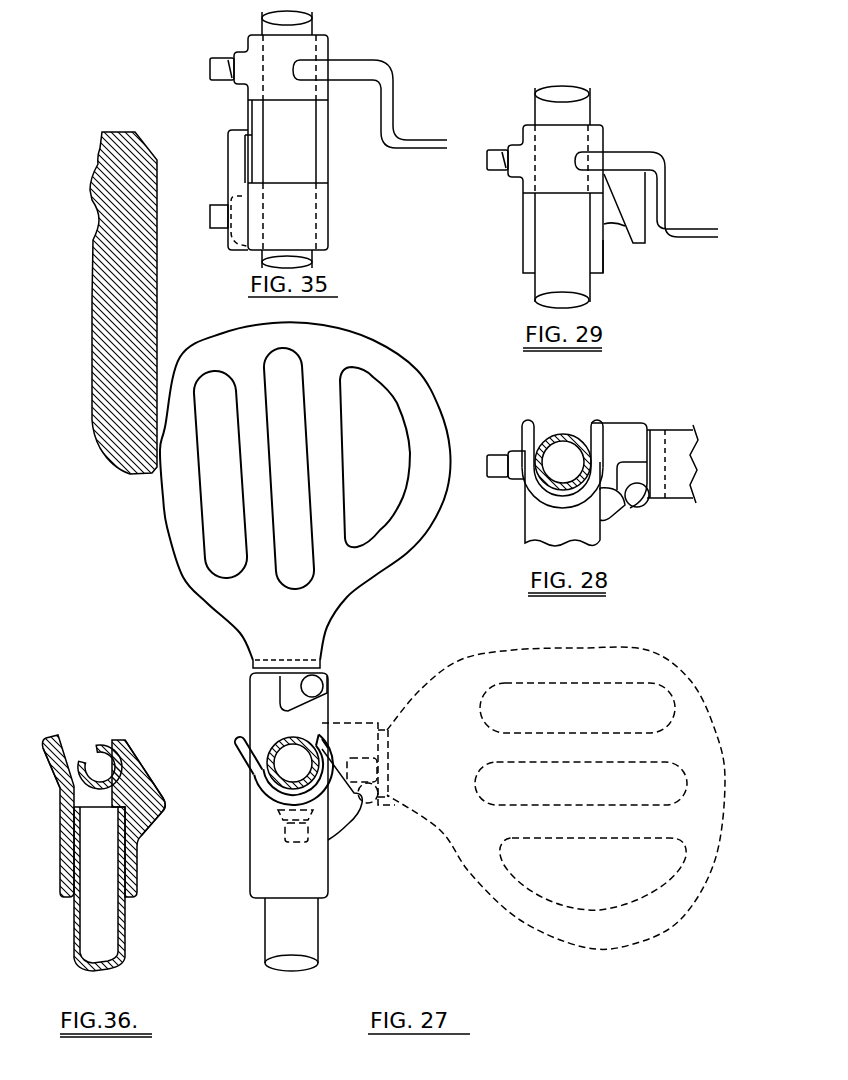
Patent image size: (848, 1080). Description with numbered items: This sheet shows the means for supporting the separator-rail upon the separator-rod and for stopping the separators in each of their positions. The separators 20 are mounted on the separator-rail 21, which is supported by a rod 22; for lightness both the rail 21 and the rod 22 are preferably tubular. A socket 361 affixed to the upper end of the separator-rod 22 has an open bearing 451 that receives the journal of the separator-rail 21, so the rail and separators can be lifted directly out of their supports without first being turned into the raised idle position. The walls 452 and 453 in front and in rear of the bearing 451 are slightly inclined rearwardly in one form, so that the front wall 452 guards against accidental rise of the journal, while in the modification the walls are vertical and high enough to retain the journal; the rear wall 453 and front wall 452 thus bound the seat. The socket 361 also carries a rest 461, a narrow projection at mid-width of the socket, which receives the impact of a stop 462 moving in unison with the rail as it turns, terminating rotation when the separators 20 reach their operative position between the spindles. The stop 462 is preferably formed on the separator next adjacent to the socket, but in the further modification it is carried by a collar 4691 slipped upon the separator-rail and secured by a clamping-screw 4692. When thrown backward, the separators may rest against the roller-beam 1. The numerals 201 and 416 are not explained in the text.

In FIG. 27, the roller-beam 1 is at (91, 290).
In FIG. 35, the separator 20 is at (370, 104).
In FIG. 29, the separator 20 is at (646, 194).
In FIG. 28, the separator 20 is at (672, 464).
In FIG. 27, the separator 20 is at (442, 635).
In FIG. 35, the separator-rail 21 is at (289, 139).
In FIG. 29, the separator-rail 21 is at (562, 197).
In FIG. 28, the separator-rail 21 is at (563, 462).
In FIG. 27, the separator-rail 21 is at (293, 763).
In FIG. 36, the separator-rail 21 is at (94, 742).
In FIG. 27, the separator-rod 22 is at (320, 928).
In FIG. 36, the separator-rod 22 is at (72, 930).
In FIG. 35, the hub 201 is at (269, 67).
In FIG. 29, the hub 201 is at (545, 159).
In FIG. 28, the hub 201 is at (567, 456).
In FIG. 27, the hub 201 is at (289, 694).
In FIG. 35, the socket 361 is at (331, 165).
In FIG. 28, the socket 361 is at (523, 519).
In FIG. 27, the socket 361 is at (249, 838).
In FIG. 36, the socket 361 is at (58, 836).
In FIG. 35, the slot 416 is at (251, 144).
In FIG. 28, the open bearing 451 is at (562, 454).
In FIG. 27, the open bearing 451 is at (304, 737).
In FIG. 29, the front wall 452 is at (606, 270).
In FIG. 28, the front wall 452 is at (598, 418).
In FIG. 27, the front wall 452 is at (327, 742).
In FIG. 29, the rear wall 453 is at (521, 258).
In FIG. 28, the rear wall 453 is at (528, 418).
In FIG. 27, the rear wall 453 is at (234, 755).
In FIG. 36, the rear wall 453 is at (45, 763).
In FIG. 29, the rest 461 is at (620, 246).
In FIG. 28, the rest 461 is at (628, 515).
In FIG. 27, the rest 461 is at (357, 804).
In FIG. 36, the rest 461 is at (166, 798).
In FIG. 35, the stop 462 is at (227, 150).
In FIG. 29, the stop 462 is at (649, 236).
In FIG. 28, the stop 462 is at (642, 506).
In FIG. 27, the stop 462 is at (323, 683).
In FIG. 35, the collar 4691 is at (269, 221).
In FIG. 35, the clamping-screw 4692 is at (209, 220).